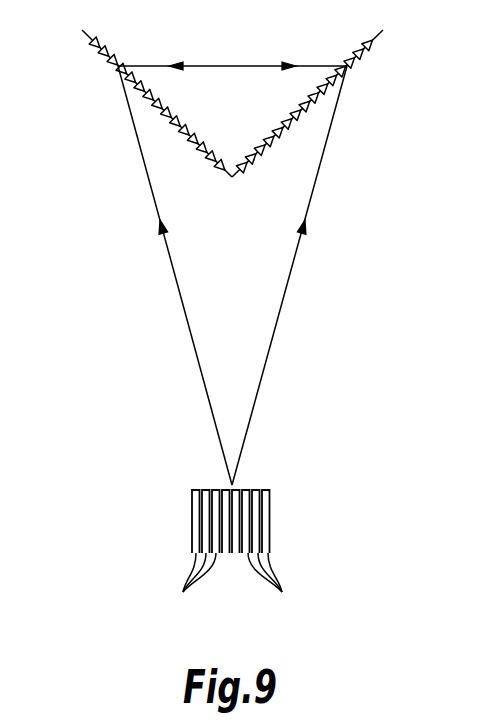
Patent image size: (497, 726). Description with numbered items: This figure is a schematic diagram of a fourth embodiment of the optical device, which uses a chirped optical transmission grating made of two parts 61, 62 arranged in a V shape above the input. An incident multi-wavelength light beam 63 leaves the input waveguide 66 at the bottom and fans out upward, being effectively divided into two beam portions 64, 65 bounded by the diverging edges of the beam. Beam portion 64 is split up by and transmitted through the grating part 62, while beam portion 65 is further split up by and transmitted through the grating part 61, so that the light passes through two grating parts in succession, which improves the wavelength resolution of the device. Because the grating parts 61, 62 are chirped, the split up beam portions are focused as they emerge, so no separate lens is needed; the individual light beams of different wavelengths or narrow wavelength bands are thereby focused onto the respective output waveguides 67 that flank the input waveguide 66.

The grating part 61 is at (192, 140).
The grating part 62 is at (272, 140).
The incident multi-wavelength light beam 63 is at (231, 275).
The beam portion 64 is at (132, 128).
The beam portion 65 is at (331, 128).
The input waveguide 66 is at (232, 553).
The output waveguides 67 is at (232, 588).